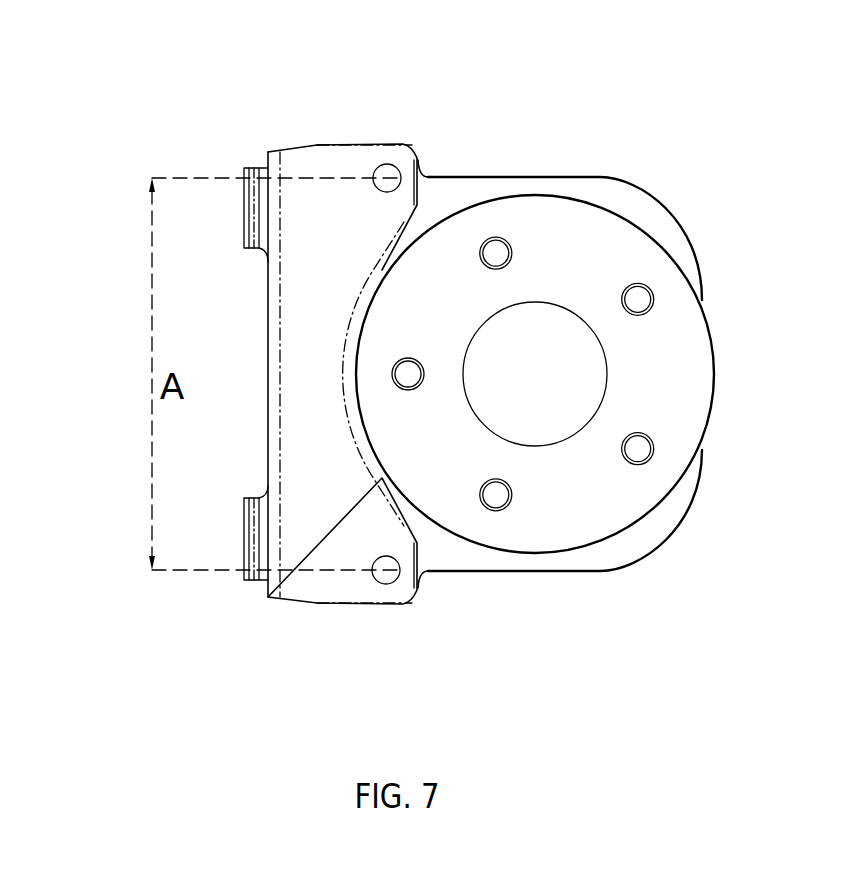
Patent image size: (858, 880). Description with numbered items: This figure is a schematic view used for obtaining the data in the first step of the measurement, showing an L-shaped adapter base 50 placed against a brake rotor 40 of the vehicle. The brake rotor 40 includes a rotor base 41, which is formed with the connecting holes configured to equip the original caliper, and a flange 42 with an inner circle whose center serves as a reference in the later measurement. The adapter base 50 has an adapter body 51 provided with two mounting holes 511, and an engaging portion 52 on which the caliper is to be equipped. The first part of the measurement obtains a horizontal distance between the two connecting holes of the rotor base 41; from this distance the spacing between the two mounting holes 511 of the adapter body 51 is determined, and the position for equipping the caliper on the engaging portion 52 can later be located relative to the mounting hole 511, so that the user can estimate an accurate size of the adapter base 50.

The brake rotor 40 is at (702, 200).
The rotor base 41 is at (574, 183).
The flange 42 is at (690, 333).
The L-shaped adapter base 50 is at (303, 310).
The adapter body 51 is at (322, 152).
The mounting hole 511 is at (388, 192).
The engaging portion 52 is at (260, 168).